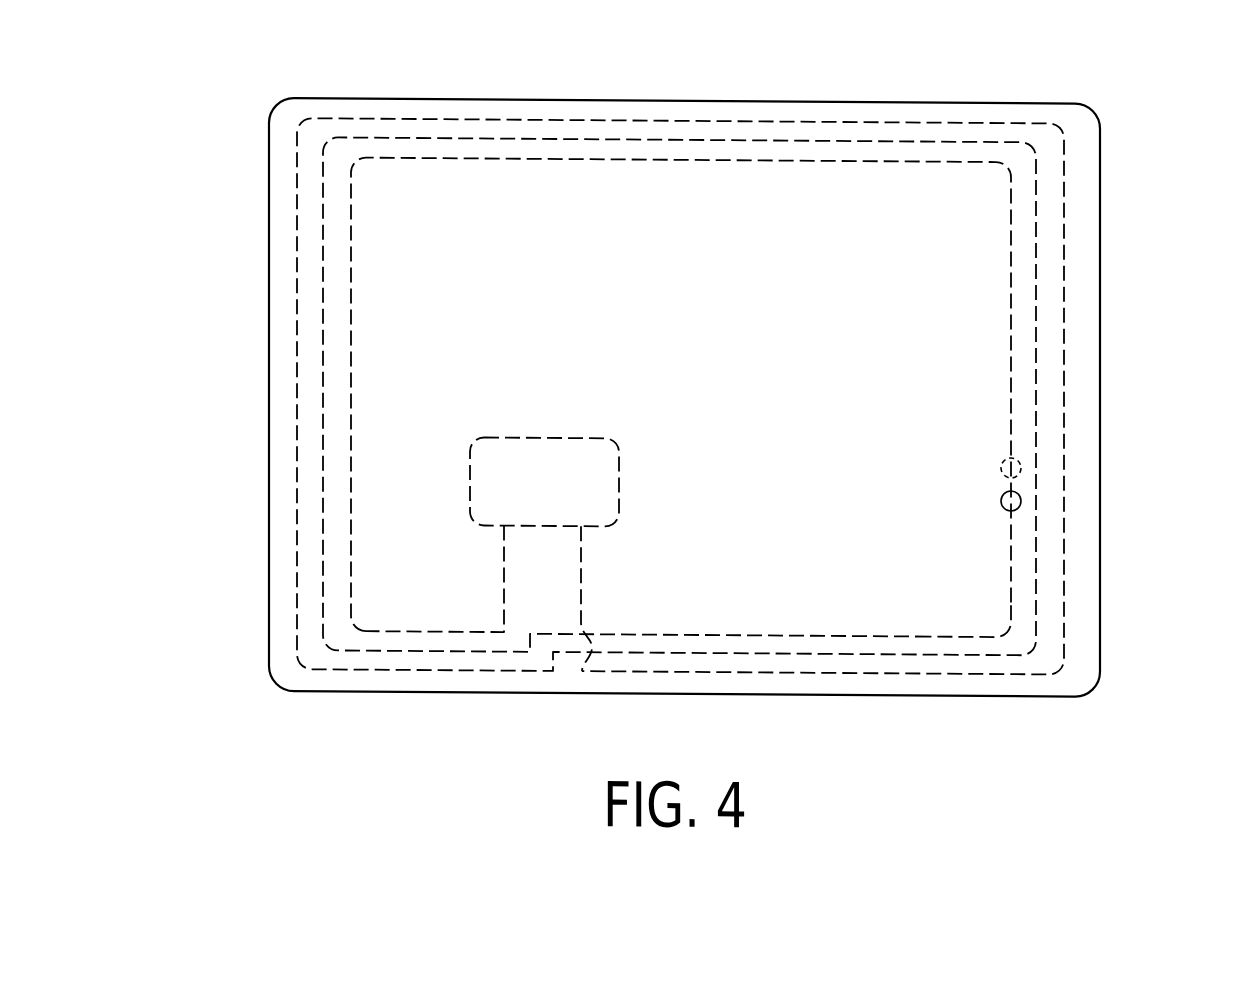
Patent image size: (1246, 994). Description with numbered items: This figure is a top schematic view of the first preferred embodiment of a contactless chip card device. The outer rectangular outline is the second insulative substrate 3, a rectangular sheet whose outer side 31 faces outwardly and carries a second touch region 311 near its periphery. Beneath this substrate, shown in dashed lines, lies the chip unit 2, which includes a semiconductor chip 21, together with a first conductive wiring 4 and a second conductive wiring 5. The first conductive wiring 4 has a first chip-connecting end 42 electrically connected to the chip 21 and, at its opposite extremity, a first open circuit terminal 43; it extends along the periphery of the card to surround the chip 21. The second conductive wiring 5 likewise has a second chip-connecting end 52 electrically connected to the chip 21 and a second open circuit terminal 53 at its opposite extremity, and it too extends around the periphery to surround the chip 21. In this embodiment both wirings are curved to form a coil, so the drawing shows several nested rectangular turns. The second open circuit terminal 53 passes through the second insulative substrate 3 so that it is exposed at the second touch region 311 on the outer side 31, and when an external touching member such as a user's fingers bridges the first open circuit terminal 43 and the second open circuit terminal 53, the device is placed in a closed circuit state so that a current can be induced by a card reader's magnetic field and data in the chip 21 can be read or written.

The chip unit 2 is at (447, 486).
The chip 21 is at (404, 479).
The second insulative substrate 3 is at (1095, 102).
The outer side 31 is at (739, 383).
The second touch region 311 is at (1016, 614).
The first conductive wiring 4 is at (1012, 267).
The first chip-connecting end 42 is at (504, 540).
The first open circuit terminal 43 is at (1011, 435).
The second conductive wiring 5 is at (982, 633).
The second chip-connecting end 52 is at (578, 541).
The second open circuit terminal 53 is at (1021, 495).